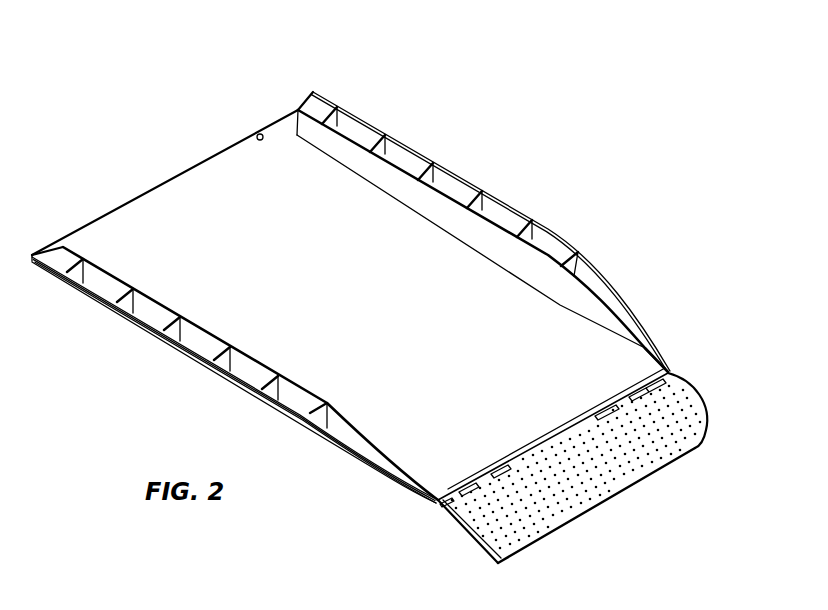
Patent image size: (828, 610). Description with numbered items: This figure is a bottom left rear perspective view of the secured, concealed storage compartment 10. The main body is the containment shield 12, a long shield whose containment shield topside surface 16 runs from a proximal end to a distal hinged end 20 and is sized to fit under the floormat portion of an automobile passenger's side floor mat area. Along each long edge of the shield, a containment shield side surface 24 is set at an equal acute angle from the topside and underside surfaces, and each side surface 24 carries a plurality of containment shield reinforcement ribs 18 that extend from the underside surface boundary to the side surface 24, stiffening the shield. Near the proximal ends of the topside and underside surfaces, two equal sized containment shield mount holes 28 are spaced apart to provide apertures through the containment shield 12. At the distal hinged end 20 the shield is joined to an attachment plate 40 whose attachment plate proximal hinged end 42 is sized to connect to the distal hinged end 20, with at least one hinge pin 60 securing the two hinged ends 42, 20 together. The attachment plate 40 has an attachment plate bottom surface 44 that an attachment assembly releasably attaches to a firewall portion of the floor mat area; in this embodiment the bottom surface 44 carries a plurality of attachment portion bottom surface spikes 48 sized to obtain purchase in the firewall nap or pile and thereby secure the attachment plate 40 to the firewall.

The secured, concealed storage compartment 10 is at (588, 182).
The containment shield 12 is at (230, 137).
The containment shield topside surface 16 is at (253, 192).
The containment shield reinforcement ribs 18 is at (423, 170).
The containment shield distal hinged end 20 is at (640, 382).
The containment shield side surface 24 is at (232, 385).
The containment shield mount holes 28 is at (257, 134).
The attachment plate 40 is at (570, 530).
The attachment plate proximal hinged end 42 is at (620, 397).
The attachment plate bottom surface 44 is at (605, 493).
The attachment portion bottom surface spikes 48 is at (652, 466).
The hinge pin 60 is at (438, 503).